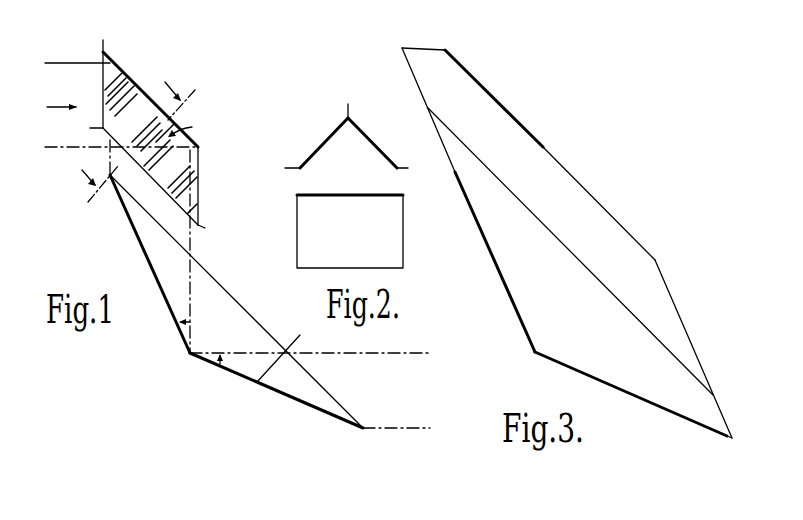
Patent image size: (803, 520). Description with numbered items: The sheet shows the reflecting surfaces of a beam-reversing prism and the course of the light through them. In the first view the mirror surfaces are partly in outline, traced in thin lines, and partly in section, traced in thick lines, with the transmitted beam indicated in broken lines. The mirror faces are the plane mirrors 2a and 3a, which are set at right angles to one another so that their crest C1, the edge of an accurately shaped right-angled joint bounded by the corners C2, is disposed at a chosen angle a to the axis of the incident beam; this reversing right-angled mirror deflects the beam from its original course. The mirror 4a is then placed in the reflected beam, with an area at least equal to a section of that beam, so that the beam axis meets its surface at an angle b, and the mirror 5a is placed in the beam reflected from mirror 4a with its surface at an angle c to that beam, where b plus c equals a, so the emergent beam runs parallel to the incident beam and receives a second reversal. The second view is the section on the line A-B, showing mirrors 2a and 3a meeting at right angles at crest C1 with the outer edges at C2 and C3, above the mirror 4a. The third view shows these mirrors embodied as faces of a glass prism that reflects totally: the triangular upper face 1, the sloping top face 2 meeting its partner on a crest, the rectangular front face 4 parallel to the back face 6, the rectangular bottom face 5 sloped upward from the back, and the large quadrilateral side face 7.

In FIG. 3, the upper face 1 is at (446, 50).
In FIG. 3, the sloping top face 2 is at (478, 96).
In FIG. 3, the front face 4 is at (487, 242).
In FIG. 3, the bottom face 5 is at (592, 378).
In FIG. 3, the back face 6 is at (717, 403).
In FIG. 3, the side face 7 is at (523, 288).
In FIG. 1, the mirror face 2a is at (138, 105).
In FIG. 2, the mirror face 2a is at (388, 158).
In FIG. 2, the mirror face 3a is at (310, 158).
In FIG. 1, the mirror face 4a is at (168, 302).
In FIG. 2, the mirror face 4a is at (364, 227).
In FIG. 1, the mirror face 5a is at (285, 350).
In FIG. 1, the angle a is at (185, 128).
In FIG. 1, the angle b is at (179, 332).
In FIG. 1, the angle c is at (217, 362).
In FIG. 1, the section line point A is at (188, 97).
In FIG. 1, the section line point B is at (95, 192).
In FIG. 1, the crest of right-angled mirror C1 is at (205, 150).
In FIG. 2, the crest of right-angled mirror C1 is at (347, 102).
In FIG. 1, the corner of right-angled mirror C2 is at (146, 179).
In FIG. 2, the corner of right-angled mirror C2 is at (410, 170).
In FIG. 2, the corner of right-angled mirror C3 is at (283, 170).